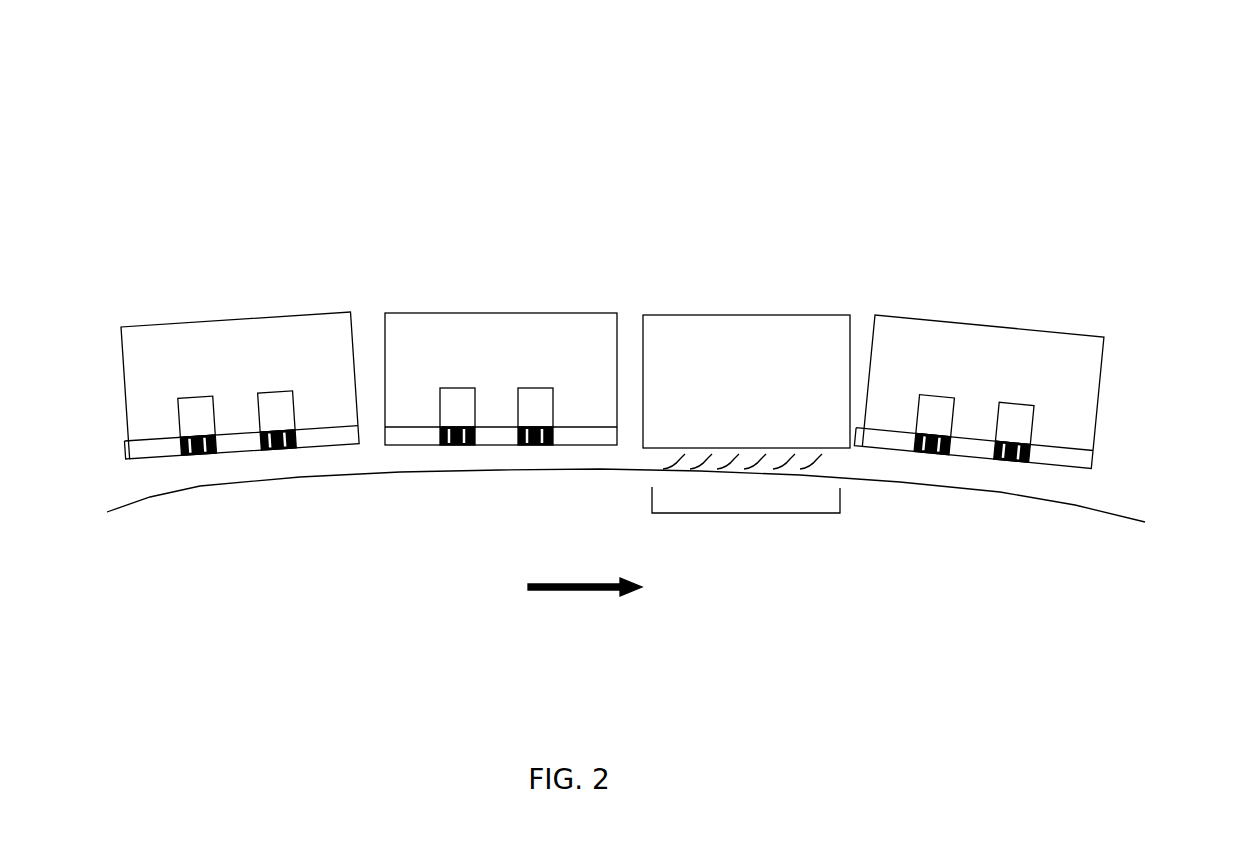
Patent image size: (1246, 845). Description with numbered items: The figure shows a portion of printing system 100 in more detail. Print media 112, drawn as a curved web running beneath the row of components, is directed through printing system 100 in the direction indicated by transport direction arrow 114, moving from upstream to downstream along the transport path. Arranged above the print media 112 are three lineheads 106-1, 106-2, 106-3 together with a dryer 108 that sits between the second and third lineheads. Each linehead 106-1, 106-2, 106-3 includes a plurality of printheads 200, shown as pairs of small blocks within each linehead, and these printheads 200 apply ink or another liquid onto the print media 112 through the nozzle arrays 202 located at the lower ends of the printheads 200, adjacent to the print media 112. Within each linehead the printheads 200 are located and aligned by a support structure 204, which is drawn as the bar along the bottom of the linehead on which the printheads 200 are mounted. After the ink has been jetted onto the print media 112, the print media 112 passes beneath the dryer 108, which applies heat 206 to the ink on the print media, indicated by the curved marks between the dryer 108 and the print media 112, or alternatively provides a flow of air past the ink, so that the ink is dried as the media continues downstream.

The printing system 100 is at (597, 88).
The linehead 106-1 is at (168, 322).
The linehead 106-2 is at (440, 312).
The linehead 106-3 is at (912, 318).
The dryer 108 is at (745, 315).
The print media 112 is at (1140, 513).
The transport direction arrow 114 is at (578, 592).
The printhead 200 is at (600, 385).
The nozzle array 202 is at (197, 452).
The support structure 204 is at (125, 446).
The heat 206 is at (747, 513).